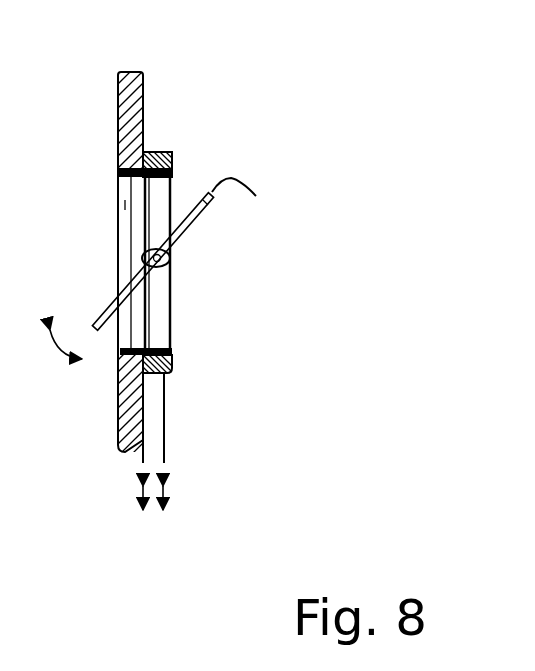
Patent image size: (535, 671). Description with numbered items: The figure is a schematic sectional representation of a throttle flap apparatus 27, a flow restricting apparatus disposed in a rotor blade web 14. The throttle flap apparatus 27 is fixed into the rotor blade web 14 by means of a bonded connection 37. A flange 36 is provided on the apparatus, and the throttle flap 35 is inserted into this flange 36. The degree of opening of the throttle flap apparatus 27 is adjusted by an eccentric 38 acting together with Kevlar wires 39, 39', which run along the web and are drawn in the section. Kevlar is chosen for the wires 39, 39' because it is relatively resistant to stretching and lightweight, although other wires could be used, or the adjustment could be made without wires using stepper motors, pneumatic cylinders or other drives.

The rotor blade web 14 is at (143, 93).
The throttle flap apparatus 27 is at (230, 170).
The throttle flap 35 is at (256, 196).
The flange 36 is at (153, 152).
The bonded connection 37 is at (148, 144).
The eccentric 38 is at (170, 253).
The Kevlar wire 39 is at (200, 418).
The Kevlar wire 39' is at (192, 286).